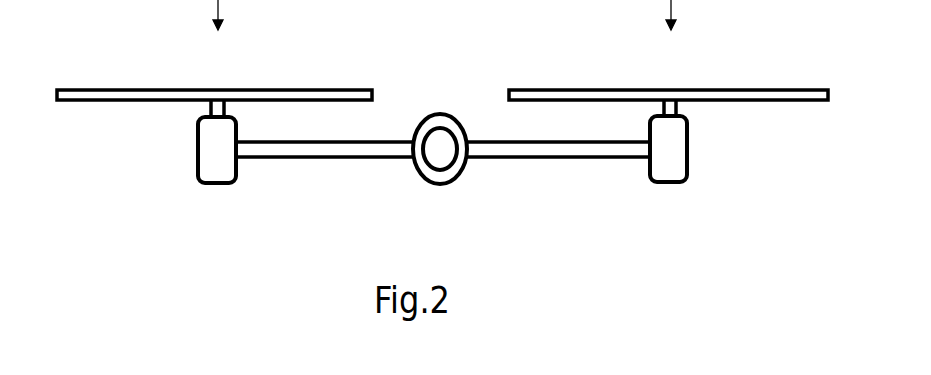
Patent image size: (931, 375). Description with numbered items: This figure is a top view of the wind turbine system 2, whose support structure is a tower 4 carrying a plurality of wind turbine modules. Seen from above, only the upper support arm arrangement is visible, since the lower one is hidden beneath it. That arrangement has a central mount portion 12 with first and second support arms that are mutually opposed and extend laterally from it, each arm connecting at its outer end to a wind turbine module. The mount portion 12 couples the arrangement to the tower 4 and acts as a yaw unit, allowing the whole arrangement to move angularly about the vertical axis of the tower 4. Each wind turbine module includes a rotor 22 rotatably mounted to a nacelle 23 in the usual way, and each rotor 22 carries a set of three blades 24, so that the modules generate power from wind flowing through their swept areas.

The wind turbine system 2 is at (143, 180).
The tower 4 is at (458, 162).
The mount portion 12 is at (440, 187).
The rotor 22 is at (208, 110).
The nacelle 23 is at (237, 180).
The blades 24 is at (96, 89).